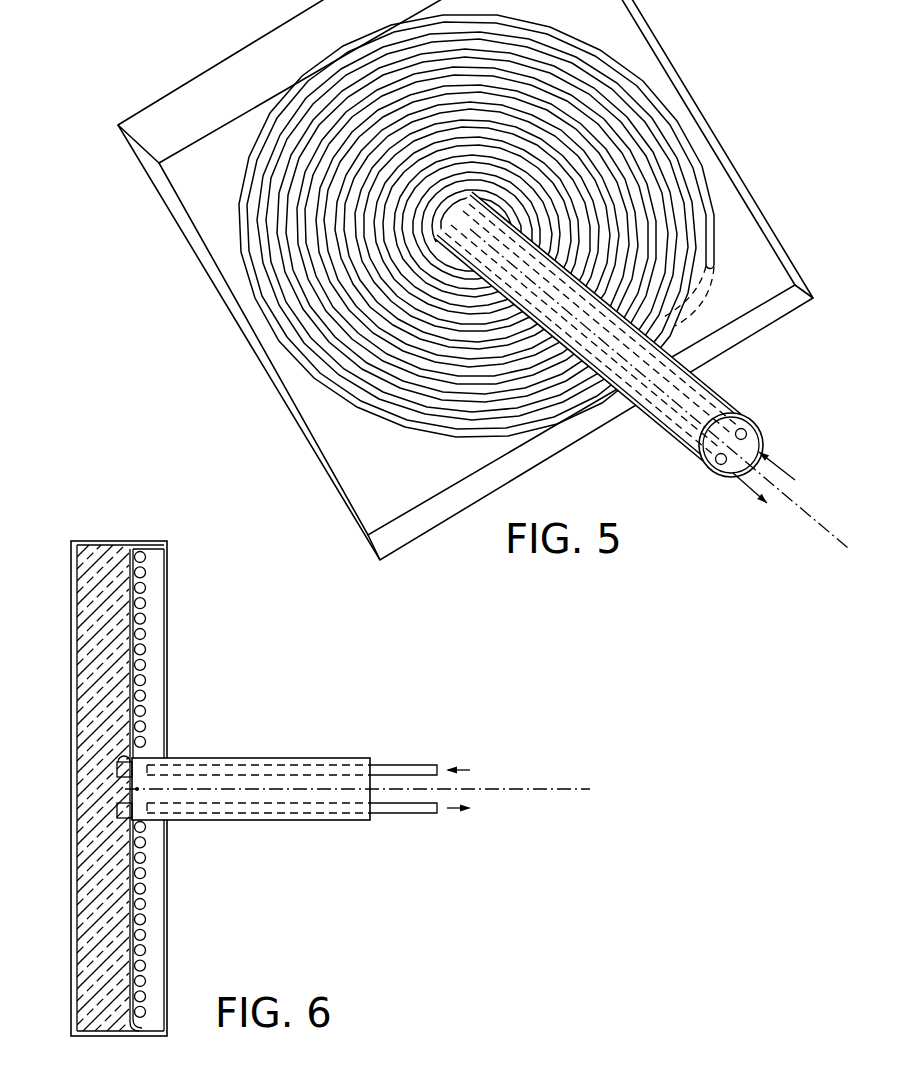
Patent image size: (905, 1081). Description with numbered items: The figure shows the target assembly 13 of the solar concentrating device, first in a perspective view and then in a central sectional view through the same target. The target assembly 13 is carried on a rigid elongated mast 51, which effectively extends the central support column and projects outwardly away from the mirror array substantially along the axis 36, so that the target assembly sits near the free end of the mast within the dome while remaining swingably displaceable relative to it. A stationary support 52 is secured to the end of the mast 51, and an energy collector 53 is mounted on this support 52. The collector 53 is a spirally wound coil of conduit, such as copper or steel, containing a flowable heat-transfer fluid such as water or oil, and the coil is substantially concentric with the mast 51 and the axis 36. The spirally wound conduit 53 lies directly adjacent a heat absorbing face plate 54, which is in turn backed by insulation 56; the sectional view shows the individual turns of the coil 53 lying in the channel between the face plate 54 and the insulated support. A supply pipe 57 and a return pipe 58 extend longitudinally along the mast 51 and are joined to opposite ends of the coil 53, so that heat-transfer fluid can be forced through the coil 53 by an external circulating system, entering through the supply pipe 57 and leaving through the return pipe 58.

In FIG. 5, the target assembly 13 is at (192, 323).
In FIG. 6, the target assembly 13 is at (178, 637).
In FIG. 5, the axis 36 is at (822, 528).
In FIG. 6, the axis 36 is at (571, 786).
In FIG. 5, the mast 51 is at (733, 412).
In FIG. 6, the mast 51 is at (348, 824).
In FIG. 5, the stationary support 52 is at (229, 70).
In FIG. 6, the stationary support 52 is at (72, 616).
In FIG. 5, the energy collector 53 is at (668, 134).
In FIG. 6, the energy collector 53 is at (143, 601).
In FIG. 6, the heat absorbing face plate 54 is at (143, 567).
In FIG. 6, the insulation 56 is at (97, 552).
In FIG. 5, the supply pipe 57 is at (752, 434).
In FIG. 6, the supply pipe 57 is at (407, 768).
In FIG. 5, the return pipe 58 is at (723, 470).
In FIG. 6, the return pipe 58 is at (407, 811).